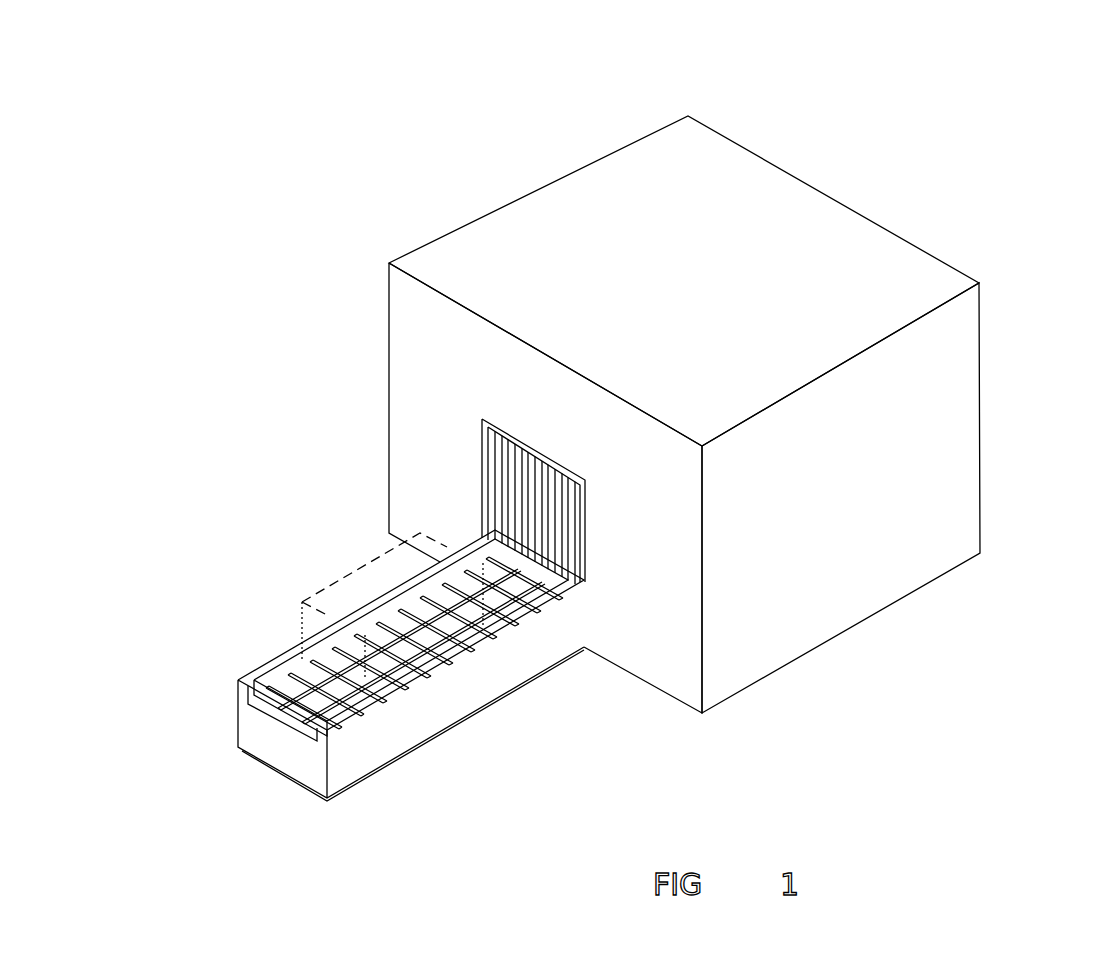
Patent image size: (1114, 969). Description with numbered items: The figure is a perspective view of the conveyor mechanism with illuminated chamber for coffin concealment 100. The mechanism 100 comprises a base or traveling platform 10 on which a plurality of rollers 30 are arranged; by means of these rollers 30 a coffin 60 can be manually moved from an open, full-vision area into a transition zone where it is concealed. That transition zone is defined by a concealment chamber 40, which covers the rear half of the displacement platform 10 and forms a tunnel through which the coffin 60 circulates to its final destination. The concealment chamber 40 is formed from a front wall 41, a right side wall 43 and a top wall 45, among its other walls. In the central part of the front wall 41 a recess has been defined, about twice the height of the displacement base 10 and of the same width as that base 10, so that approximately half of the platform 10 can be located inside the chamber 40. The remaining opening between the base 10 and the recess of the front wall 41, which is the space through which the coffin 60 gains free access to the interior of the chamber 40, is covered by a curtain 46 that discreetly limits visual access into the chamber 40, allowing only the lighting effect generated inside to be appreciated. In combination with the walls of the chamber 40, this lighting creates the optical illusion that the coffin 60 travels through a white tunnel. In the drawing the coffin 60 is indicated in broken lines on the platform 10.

The conveyor mechanism with illuminated chamber for coffin concealment 100 is at (631, 432).
The base or traveling platform 10 is at (377, 665).
The rollers 30 is at (280, 702).
The concealment chamber 40 is at (692, 414).
The front wall 41 is at (423, 342).
The right side wall 43 is at (840, 601).
The top wall 45 is at (852, 256).
The curtain 46 is at (467, 477).
The coffin 60 is at (332, 578).